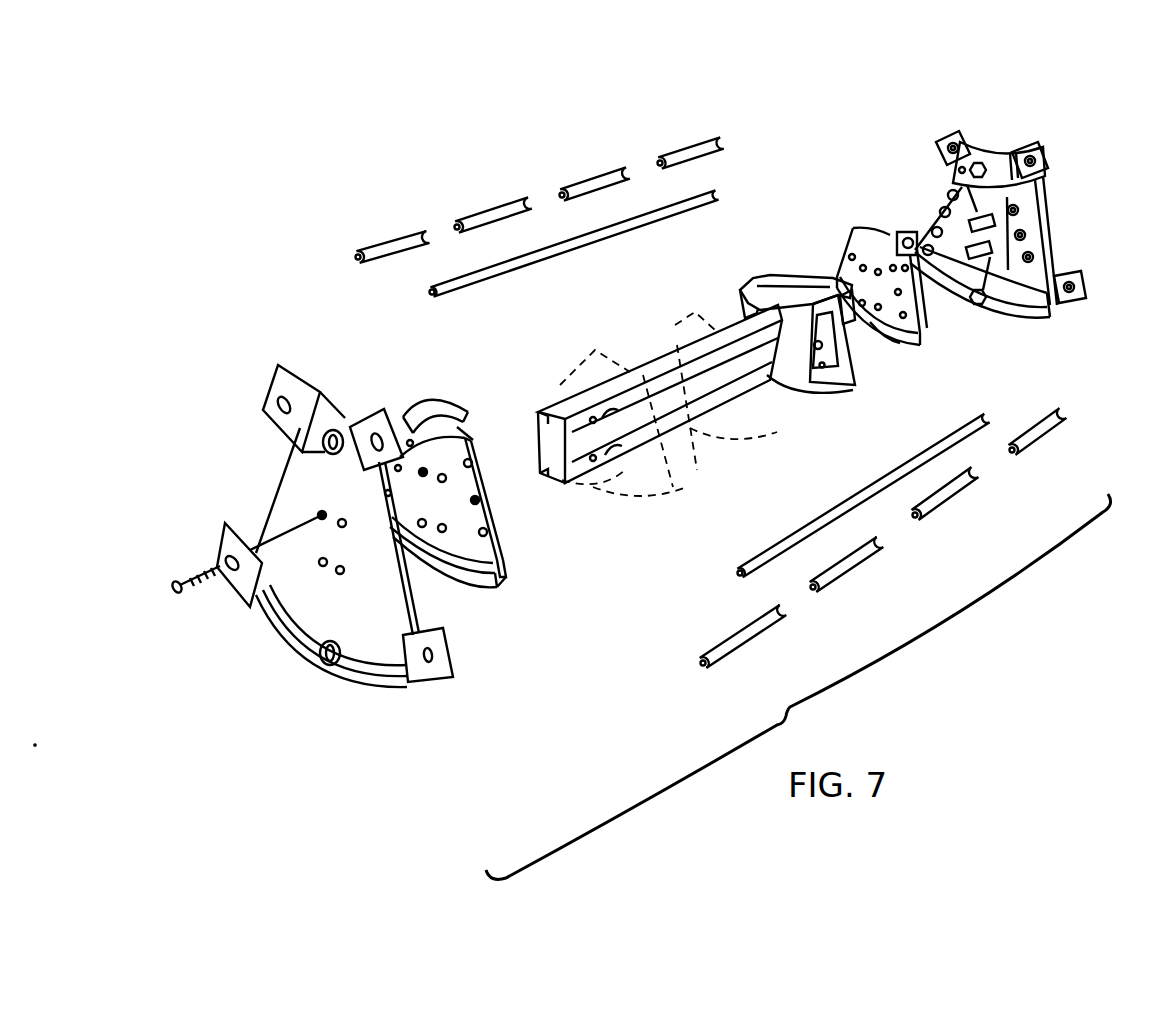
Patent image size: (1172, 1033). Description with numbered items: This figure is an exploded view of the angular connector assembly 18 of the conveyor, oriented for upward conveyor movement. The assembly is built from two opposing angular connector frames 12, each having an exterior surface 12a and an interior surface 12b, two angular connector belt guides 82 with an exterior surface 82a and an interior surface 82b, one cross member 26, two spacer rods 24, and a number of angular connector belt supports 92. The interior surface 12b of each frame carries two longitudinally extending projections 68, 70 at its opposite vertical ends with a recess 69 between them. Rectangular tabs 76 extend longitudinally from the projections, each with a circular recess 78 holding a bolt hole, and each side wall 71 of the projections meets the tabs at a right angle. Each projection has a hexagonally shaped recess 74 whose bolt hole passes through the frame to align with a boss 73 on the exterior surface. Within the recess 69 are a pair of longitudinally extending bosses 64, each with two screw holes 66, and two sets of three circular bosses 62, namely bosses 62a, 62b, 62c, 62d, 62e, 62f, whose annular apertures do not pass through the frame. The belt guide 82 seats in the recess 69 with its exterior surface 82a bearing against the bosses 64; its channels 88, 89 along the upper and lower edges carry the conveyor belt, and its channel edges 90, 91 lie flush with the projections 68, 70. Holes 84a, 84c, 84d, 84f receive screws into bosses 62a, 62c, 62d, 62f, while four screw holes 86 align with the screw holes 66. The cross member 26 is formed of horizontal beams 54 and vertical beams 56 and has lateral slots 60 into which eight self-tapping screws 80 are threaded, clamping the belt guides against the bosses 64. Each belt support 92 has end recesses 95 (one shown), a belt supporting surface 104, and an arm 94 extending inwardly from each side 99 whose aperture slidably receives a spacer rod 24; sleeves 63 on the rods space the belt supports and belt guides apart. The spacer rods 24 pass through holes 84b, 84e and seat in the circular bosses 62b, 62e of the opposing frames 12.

The angular connector frame 12 is at (381, 704).
The exterior surface 12a is at (293, 482).
The interior surface 12b is at (993, 300).
The angular connector assembly 18 is at (475, 128).
The spacer rod 24 is at (720, 196).
The cross member 26 is at (540, 398).
The horizontal beam 54 is at (663, 360).
The vertical beam 56 is at (533, 447).
The lateral slot 60 is at (552, 478).
The circular boss 62 is at (983, 247).
The circular boss 62a is at (1019, 210).
The circular boss 62b is at (1026, 235).
The circular boss 62c is at (1034, 257).
The circular boss 62d is at (945, 212).
The circular boss 62e is at (937, 233).
The circular boss 62f is at (928, 250).
The sleeve 63 is at (457, 227).
The boss 64 is at (980, 307).
The screw hole 66 is at (950, 140).
The projection 68 is at (997, 148).
The recess 69 is at (1013, 200).
The projection 70 is at (1010, 297).
The side wall 71 is at (1010, 157).
The boss 73 is at (333, 430).
The hexagonally shaped recess 74 is at (980, 163).
The rectangular tab 76 is at (1012, 165).
The circular recess 78 is at (1040, 147).
The self-tapping screw 80 is at (190, 592).
The angular connector belt guide 82 is at (417, 390).
The exterior surface 82a is at (462, 540).
The interior surface 82b is at (873, 326).
The hole 84a is at (903, 235).
The hole 84b is at (915, 235).
The hole 84c is at (903, 320).
The hole 84d is at (852, 258).
The hole 84e is at (838, 270).
The hole 84f is at (390, 497).
The screw hole 86 is at (887, 240).
The channel 88 is at (857, 242).
The channel 89 is at (920, 330).
The channel edge 90 is at (867, 235).
The channel edge 91 is at (877, 320).
The angular connector belt support 92 is at (705, 488).
The arm 94 is at (822, 366).
The recess 95 is at (818, 350).
The side 99 is at (750, 298).
The belt supporting surface 104 is at (760, 298).